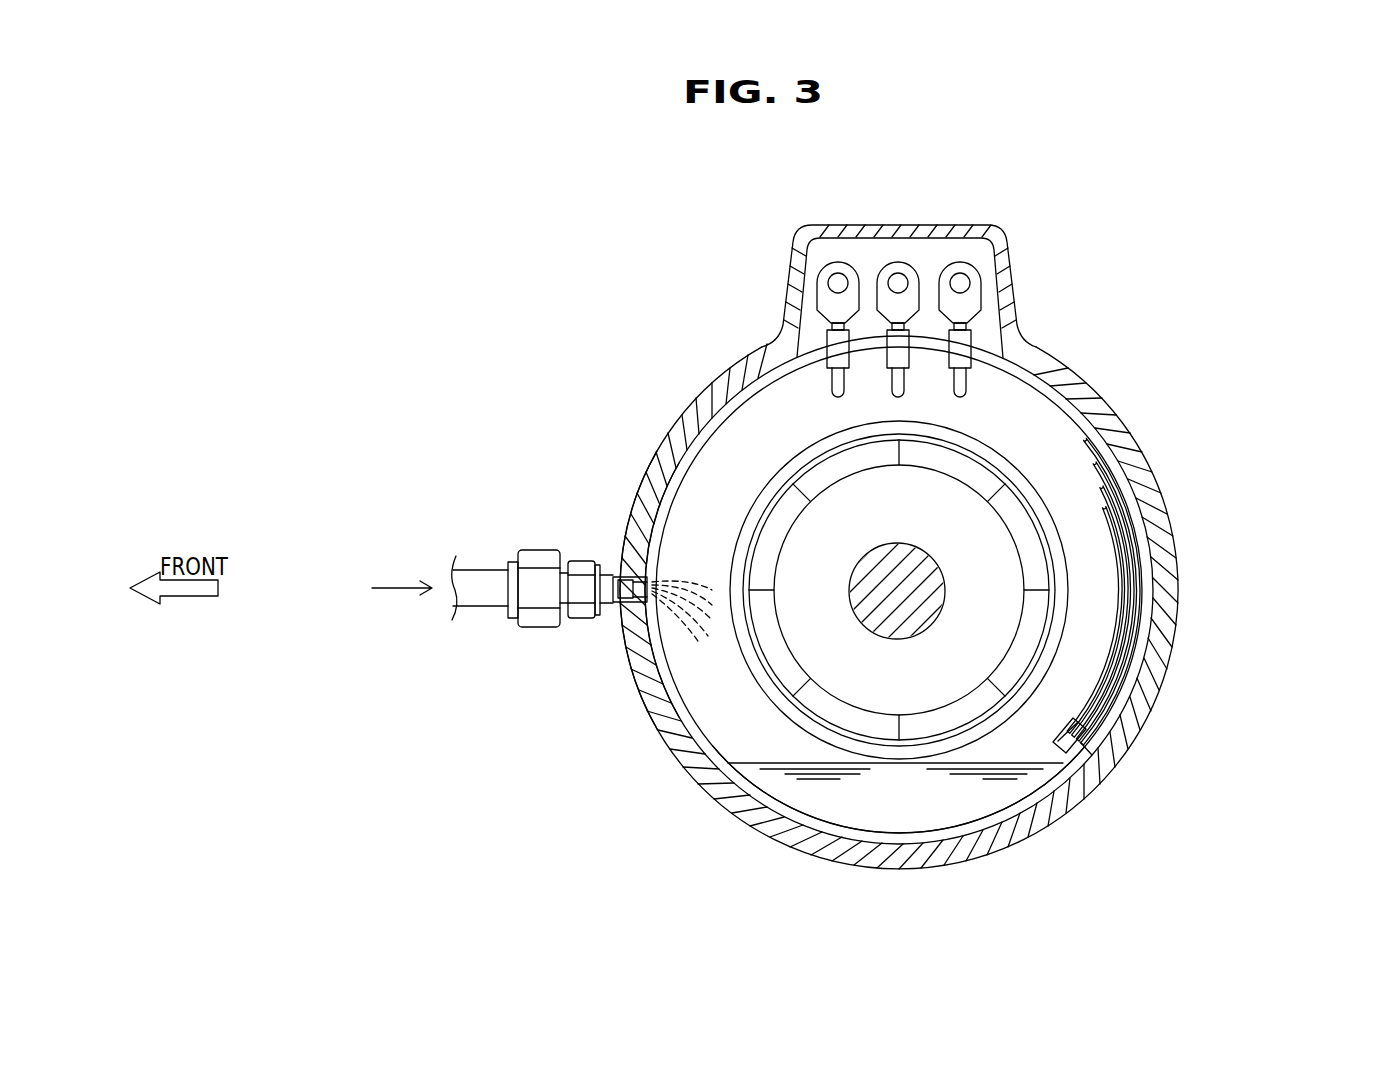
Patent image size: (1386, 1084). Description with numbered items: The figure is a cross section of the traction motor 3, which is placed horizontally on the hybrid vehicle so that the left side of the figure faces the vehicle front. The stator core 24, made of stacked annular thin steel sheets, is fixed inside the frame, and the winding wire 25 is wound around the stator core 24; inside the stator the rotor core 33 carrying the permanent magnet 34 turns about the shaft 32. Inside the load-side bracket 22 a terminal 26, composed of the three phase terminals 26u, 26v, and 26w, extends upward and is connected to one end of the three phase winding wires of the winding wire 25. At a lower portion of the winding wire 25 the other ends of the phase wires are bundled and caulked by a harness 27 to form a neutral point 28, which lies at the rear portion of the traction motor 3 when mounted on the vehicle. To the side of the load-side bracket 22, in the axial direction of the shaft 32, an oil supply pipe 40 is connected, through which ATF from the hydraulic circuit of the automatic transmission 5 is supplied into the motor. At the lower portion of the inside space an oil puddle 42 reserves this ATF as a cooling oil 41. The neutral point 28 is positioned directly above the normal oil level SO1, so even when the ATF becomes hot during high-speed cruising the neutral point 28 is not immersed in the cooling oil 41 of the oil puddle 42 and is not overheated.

The traction motor 3 is at (578, 268).
The automatic transmission 5 is at (344, 572).
The load-side bracket 22 is at (640, 636).
The stator core 24 is at (692, 447).
The winding wire 25 is at (1026, 418).
The terminal 26 is at (900, 255).
The terminal 26u is at (835, 270).
The terminal 26v is at (897, 270).
The terminal 26w is at (969, 283).
The harness 27 is at (1088, 750).
The neutral point 28 is at (1086, 732).
The shaft 32 is at (921, 568).
The rotor core 33 is at (980, 625).
The permanent magnet 34 is at (1027, 563).
The oil supply pipe 40 is at (481, 578).
The cooling oil 41 is at (975, 790).
The oil puddle 42 is at (881, 812).
The normal oil level SO1 is at (752, 762).